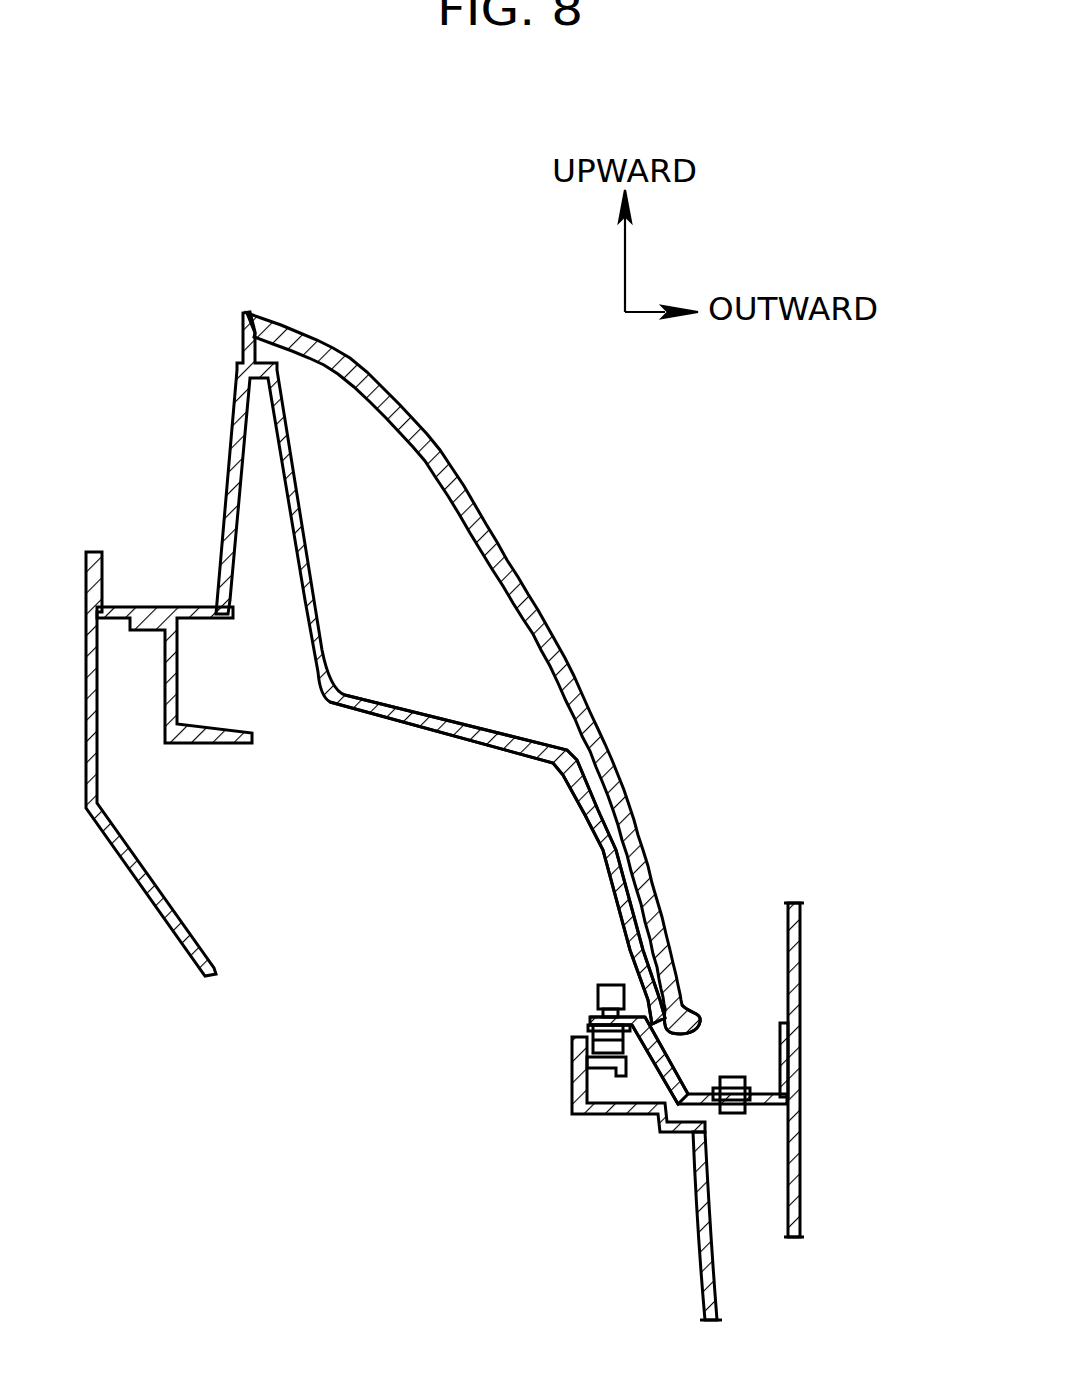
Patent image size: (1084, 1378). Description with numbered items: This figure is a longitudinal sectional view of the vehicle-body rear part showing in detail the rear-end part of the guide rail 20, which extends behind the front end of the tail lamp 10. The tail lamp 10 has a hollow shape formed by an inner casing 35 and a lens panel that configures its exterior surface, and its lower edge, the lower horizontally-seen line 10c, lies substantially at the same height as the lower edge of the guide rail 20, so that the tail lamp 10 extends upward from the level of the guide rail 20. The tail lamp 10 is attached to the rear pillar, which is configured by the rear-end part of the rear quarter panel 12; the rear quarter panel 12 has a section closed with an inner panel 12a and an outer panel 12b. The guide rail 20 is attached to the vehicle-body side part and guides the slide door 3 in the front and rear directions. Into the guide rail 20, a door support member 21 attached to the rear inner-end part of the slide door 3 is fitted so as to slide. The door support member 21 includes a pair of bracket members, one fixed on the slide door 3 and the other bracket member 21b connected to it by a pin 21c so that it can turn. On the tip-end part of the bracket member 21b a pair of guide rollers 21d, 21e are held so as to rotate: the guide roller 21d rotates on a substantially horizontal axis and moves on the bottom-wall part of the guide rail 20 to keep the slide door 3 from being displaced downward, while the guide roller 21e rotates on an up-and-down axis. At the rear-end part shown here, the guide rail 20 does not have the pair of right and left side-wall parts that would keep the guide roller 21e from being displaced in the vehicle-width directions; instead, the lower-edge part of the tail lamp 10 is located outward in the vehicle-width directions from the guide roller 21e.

The tail lamp 10 is at (508, 549).
The lower horizontally-seen line 10c is at (677, 988).
The inner casing 35 is at (413, 722).
The inner panel 12a is at (120, 858).
The outer panel 12b is at (210, 745).
The slide door 3 is at (800, 978).
The door support member 21 is at (780, 1062).
The bracket member 21b is at (687, 1077).
The pin 21c is at (735, 1068).
The guide roller 21d is at (590, 1021).
The guide roller 21e is at (598, 998).
The guide rail 20 is at (593, 1114).
The rear quarter panel 12 is at (717, 1262).